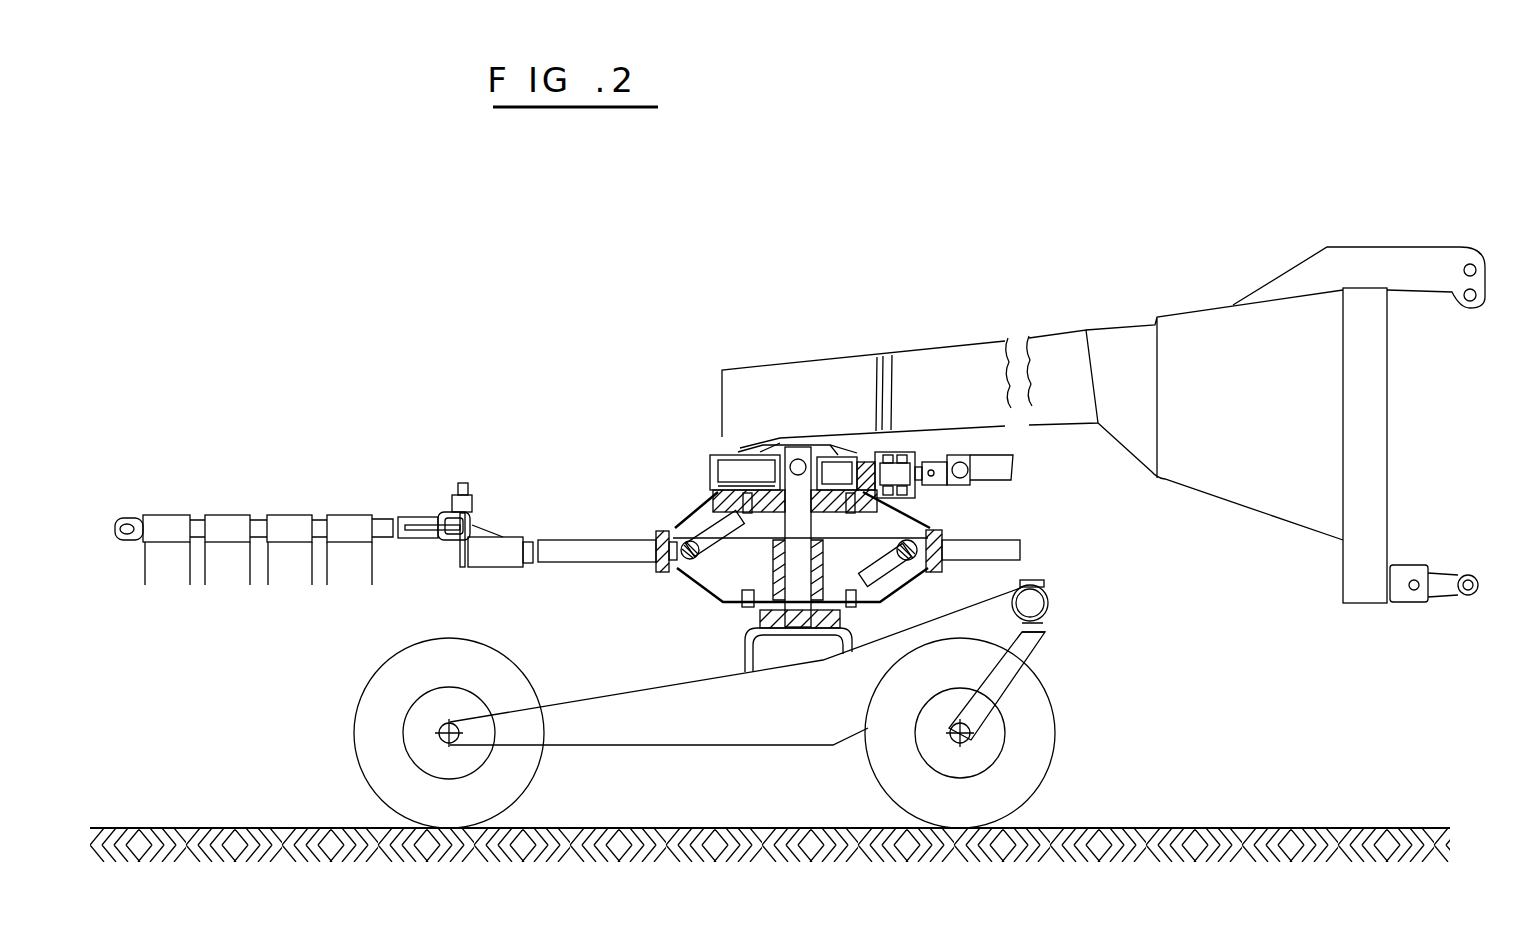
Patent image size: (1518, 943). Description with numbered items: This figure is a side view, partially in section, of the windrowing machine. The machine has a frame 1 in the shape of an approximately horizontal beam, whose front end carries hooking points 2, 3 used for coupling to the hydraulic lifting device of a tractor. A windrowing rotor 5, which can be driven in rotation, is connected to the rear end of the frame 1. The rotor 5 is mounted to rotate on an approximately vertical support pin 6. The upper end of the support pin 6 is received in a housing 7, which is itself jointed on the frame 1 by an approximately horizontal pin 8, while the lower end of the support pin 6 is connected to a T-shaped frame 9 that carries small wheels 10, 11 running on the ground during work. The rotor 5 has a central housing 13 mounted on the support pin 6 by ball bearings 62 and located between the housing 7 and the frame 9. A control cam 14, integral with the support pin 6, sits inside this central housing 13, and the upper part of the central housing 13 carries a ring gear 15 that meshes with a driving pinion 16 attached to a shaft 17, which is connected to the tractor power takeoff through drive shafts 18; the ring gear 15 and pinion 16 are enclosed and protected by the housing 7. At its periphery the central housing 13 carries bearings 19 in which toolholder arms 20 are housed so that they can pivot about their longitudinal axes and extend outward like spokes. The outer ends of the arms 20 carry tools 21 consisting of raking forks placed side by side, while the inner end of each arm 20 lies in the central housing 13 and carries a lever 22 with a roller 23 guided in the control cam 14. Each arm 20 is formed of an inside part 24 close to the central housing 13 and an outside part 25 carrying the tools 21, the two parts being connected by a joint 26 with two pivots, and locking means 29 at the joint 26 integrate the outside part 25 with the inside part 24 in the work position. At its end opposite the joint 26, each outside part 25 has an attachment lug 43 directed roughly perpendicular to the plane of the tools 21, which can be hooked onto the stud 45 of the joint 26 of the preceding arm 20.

The frame 1 is at (1063, 340).
The hooking point 2 is at (1433, 272).
The hooking point 3 is at (1478, 578).
The windrowing rotor 5 is at (688, 512).
The support pin 6 is at (796, 455).
The housing 7 is at (738, 452).
The pin 8 is at (787, 440).
The T-shaped frame 9 is at (732, 727).
The small wheel 10 is at (483, 675).
The small wheel 11 is at (1020, 720).
The central housing 13 is at (715, 613).
The control cam 14 is at (703, 594).
The ring gear 15 is at (713, 490).
The driving pinion 16 is at (860, 453).
The shaft 17 is at (897, 440).
The drive shaft 18 is at (997, 455).
The bearing 19 is at (646, 543).
The toolholder arm 20 is at (588, 540).
The tool 21 is at (307, 570).
The lever 22 is at (890, 563).
The roller 23 is at (877, 580).
The inside part 24 is at (557, 548).
The outside part 25 is at (320, 513).
The joint 26 is at (445, 502).
The locking means 29 is at (428, 530).
The attachment lug 43 is at (125, 518).
The stud 45 is at (460, 483).
The ball bearing 62 is at (742, 615).